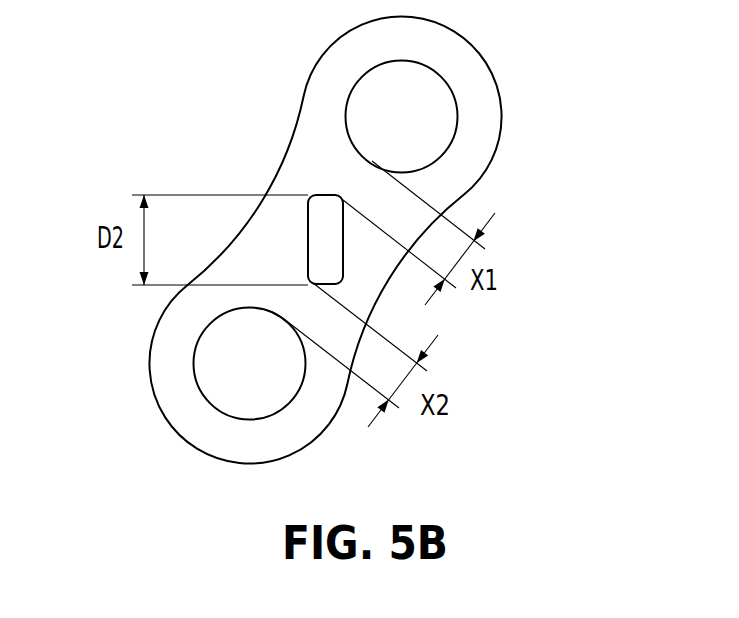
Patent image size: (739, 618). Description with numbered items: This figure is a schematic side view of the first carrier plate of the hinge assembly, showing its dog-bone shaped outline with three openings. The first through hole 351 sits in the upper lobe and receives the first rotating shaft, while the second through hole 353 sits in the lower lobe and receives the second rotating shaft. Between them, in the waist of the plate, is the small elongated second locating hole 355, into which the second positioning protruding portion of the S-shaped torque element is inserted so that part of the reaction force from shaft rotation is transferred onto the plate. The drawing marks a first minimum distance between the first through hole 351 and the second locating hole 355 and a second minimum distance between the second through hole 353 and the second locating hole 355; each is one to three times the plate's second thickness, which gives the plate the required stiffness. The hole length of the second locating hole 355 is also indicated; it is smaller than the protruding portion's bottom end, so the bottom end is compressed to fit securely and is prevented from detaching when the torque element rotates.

The first through hole 351 is at (383, 102).
The second through hole 353 is at (222, 363).
The second locating hole 355 is at (324, 205).